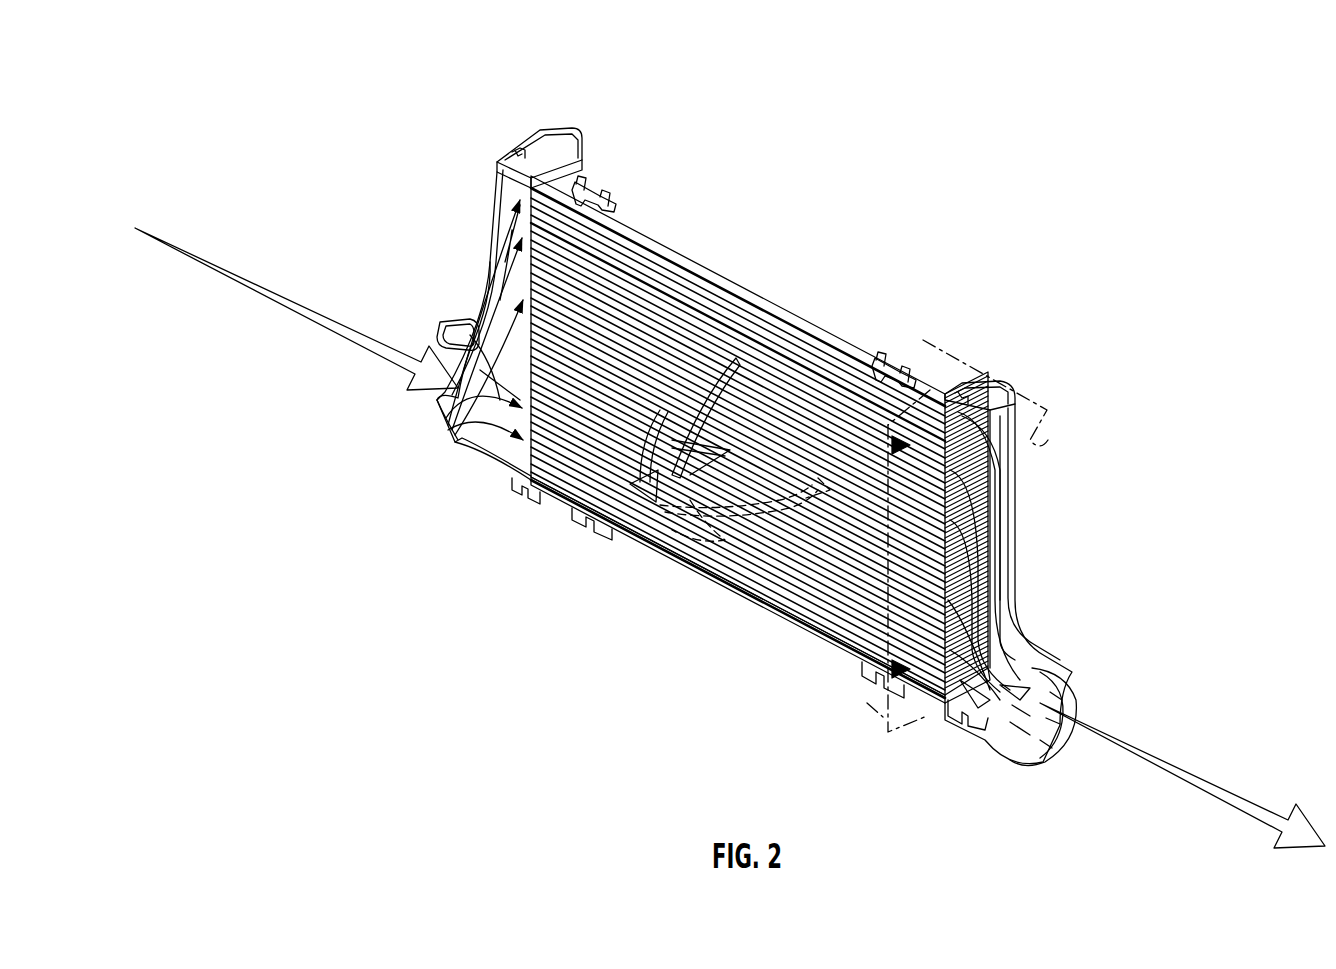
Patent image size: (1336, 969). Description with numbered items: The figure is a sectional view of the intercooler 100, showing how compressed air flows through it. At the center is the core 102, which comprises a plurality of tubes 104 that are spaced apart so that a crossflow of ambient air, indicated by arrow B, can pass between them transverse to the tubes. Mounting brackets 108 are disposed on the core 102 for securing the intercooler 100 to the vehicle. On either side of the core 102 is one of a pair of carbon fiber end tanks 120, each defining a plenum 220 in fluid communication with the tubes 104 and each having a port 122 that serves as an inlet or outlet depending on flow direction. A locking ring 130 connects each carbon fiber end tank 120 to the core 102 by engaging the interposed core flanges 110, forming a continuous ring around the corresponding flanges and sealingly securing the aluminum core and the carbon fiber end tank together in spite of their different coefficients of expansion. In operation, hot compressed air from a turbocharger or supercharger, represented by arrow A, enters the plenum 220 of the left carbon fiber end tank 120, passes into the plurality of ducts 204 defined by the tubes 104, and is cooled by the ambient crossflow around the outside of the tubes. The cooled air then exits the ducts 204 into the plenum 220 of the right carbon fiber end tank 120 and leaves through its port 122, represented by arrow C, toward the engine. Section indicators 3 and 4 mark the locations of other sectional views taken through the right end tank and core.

The intercooler 100 is at (358, 130).
The core 102 is at (708, 225).
The tubes 104 is at (645, 543).
The mounting brackets 108 is at (597, 185).
The core flanges 110 is at (522, 485).
The carbon fiber end tanks 120 is at (448, 313).
The port 122 is at (1063, 688).
The locking ring 130 is at (557, 126).
The ducts 204 is at (712, 552).
The plenum 220 is at (492, 250).
The section line 3 is at (974, 408).
The section line 4 is at (886, 578).